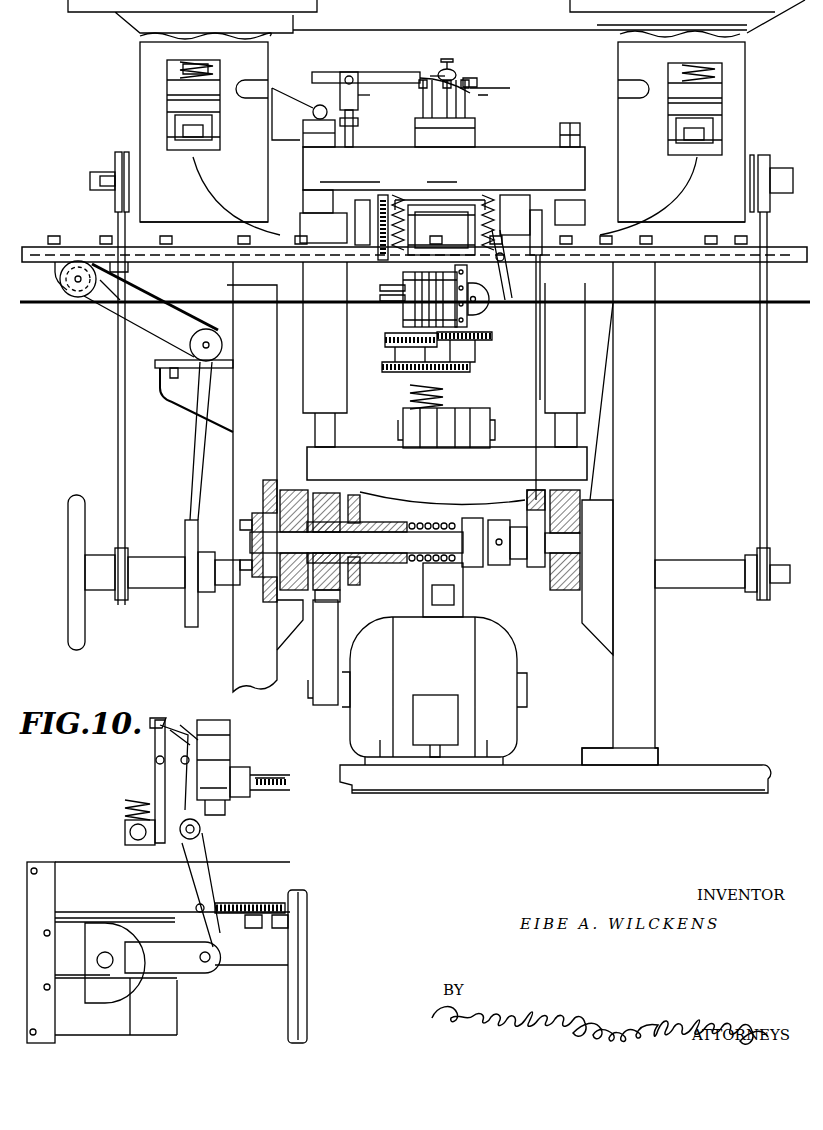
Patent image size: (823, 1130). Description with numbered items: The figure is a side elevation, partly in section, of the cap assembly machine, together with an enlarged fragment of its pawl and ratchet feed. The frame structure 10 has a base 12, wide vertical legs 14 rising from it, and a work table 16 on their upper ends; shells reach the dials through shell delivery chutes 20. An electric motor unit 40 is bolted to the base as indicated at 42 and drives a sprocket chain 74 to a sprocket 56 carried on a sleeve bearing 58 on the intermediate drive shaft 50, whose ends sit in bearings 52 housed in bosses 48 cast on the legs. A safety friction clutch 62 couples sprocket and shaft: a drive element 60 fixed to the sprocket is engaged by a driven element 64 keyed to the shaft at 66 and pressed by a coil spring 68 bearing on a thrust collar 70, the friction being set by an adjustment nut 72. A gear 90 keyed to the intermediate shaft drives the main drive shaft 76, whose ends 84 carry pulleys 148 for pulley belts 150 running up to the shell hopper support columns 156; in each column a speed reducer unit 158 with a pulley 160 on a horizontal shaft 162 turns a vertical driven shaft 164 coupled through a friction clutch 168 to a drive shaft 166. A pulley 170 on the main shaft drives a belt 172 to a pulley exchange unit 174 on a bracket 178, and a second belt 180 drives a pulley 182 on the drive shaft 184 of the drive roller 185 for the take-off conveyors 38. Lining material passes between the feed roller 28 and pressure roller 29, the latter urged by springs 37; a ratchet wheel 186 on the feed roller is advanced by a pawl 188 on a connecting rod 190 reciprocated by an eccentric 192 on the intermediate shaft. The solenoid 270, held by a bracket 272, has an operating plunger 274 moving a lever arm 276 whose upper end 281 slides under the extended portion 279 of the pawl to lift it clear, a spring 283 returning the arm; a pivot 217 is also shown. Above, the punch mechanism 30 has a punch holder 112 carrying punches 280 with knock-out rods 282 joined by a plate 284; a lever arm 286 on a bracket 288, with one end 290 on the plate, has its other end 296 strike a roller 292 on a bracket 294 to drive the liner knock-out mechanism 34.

In FIG. 1, the frame structure 10 is at (665, 644).
In FIG. 1, the base 12 is at (704, 765).
In FIG. 1, the vertical legs or standards 14 is at (650, 503).
In FIG. 1, the work table 16 is at (668, 305).
In FIG. 1, the shell delivery chute 20 is at (216, 186).
In FIG. 1, the feed roller 28 is at (432, 225).
In FIG. 1, the pressure roller 29 is at (425, 190).
In FIG. 1, the punch mechanism 30 is at (499, 147).
In FIG. 1, the liner knock-out mechanism 34 is at (461, 71).
In FIG. 10, the spring 37 is at (130, 812).
In FIG. 1, the assembled cap take-off conveyor 38 is at (75, 300).
In FIG. 1, the electric motor unit 40 is at (517, 655).
In FIG. 1, the bolted connection 42 is at (505, 758).
In FIG. 1, the boss or bearing housing 48 is at (273, 478).
In FIG. 1, the intermediate drive shaft 50 is at (580, 554).
In FIG. 1, the bearing 52 is at (248, 522).
In FIG. 1, the sprocket or gear 56 is at (345, 493).
In FIG. 1, the sleeve bearing 58 is at (292, 570).
In FIG. 1, the drive element 60 is at (340, 592).
In FIG. 1, the safety friction clutch 62 is at (372, 501).
In FIG. 1, the driven element 64 is at (366, 567).
In FIG. 1, the key 66 is at (375, 528).
In FIG. 1, the coil spring 68 is at (460, 522).
In FIG. 1, the thrust collar 70 is at (500, 567).
In FIG. 1, the adjustment nut 72 is at (480, 567).
In FIG. 1, the sprocket chain 74 is at (313, 648).
In FIG. 1, the main drive shaft 76 is at (680, 556).
In FIG. 1, the end of main drive shaft 84 is at (103, 590).
In FIG. 1, the gear 90 is at (562, 590).
In FIG. 1, the punch holder 112 is at (546, 125).
In FIG. 1, the pulley 148 is at (125, 548).
In FIG. 1, the pulley belt 150 is at (118, 412).
In FIG. 1, the shell hopper support column 156 is at (140, 68).
In FIG. 1, the speed reducer unit 158 is at (136, 152).
In FIG. 1, the pulley 160 is at (115, 160).
In FIG. 1, the horizontally extending shaft 162 is at (92, 180).
In FIG. 1, the vertical driven shaft 164 is at (183, 136).
In FIG. 1, the drive shaft 166 is at (175, 67).
In FIG. 1, the friction clutch 168 is at (220, 80).
In FIG. 1, the pulley 170 is at (162, 604).
In FIG. 1, the pulley belt 172 is at (187, 442).
In FIG. 1, the pulley exchange unit 174 is at (215, 331).
In FIG. 1, the bracket 178 is at (170, 402).
In FIG. 1, the second pulley belt 180 is at (135, 328).
In FIG. 1, the pulley 182 is at (60, 293).
In FIG. 1, the drive shaft 184 is at (130, 272).
In FIG. 1, the drive roller 185 is at (105, 306).
In FIG. 1, the ratchet wheel 186 is at (518, 225).
In FIG. 10, the ratchet wheel 186 is at (204, 720).
In FIG. 1, the pawl 188 is at (540, 290).
In FIG. 10, the pawl 188 is at (235, 805).
In FIG. 1, the connecting rod 190 is at (536, 355).
In FIG. 10, the connecting rod 190 is at (305, 916).
In FIG. 1, the eccentric 192 is at (535, 493).
In FIG. 10, the pivot 217 is at (203, 836).
In FIG. 1, the solenoid 270 is at (403, 315).
In FIG. 10, the solenoid 270 is at (45, 862).
In FIG. 1, the bracket 272 is at (392, 293).
In FIG. 1, the operating plunger 274 is at (490, 305).
In FIG. 10, the operating plunger 274 is at (147, 942).
In FIG. 1, the lever arm 276 is at (494, 291).
In FIG. 10, the lever arm 276 is at (220, 892).
In FIG. 10, the extended portion 279 is at (195, 718).
In FIG. 1, the punch 280 is at (415, 132).
In FIG. 10, the upper end 281 is at (155, 725).
In FIG. 1, the knock-out rod 282 is at (470, 95).
In FIG. 10, the spring 283 is at (290, 893).
In FIG. 1, the plate 284 is at (406, 84).
In FIG. 1, the lever arm 286 is at (413, 67).
In FIG. 1, the bracket 288 is at (358, 100).
In FIG. 1, the end of lever arm 290 is at (441, 61).
In FIG. 1, the roller 292 is at (314, 106).
In FIG. 1, the bracket 294 is at (310, 135).
In FIG. 1, the end of lever arm 296 is at (345, 72).